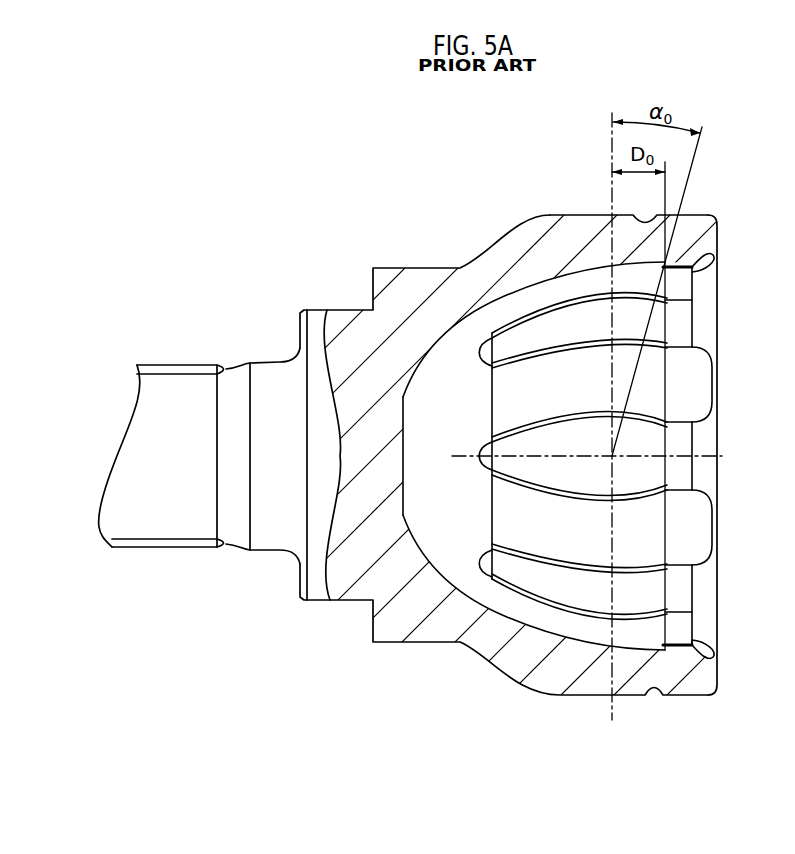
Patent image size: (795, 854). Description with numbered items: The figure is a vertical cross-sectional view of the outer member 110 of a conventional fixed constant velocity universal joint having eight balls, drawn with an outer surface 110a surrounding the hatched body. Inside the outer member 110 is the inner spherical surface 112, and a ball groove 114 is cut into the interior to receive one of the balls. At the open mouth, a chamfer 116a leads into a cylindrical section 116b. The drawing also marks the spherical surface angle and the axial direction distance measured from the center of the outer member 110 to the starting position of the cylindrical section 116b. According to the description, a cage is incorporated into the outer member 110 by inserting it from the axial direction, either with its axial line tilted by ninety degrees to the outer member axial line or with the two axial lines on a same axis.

The outer member 110 is at (538, 195).
The outer peripheral surface of outer race 110a is at (588, 215).
The inner spherical surface 112 is at (527, 284).
The ball groove 114 is at (692, 377).
The chamfer 116a is at (710, 248).
The cylindrical section 116b is at (682, 270).